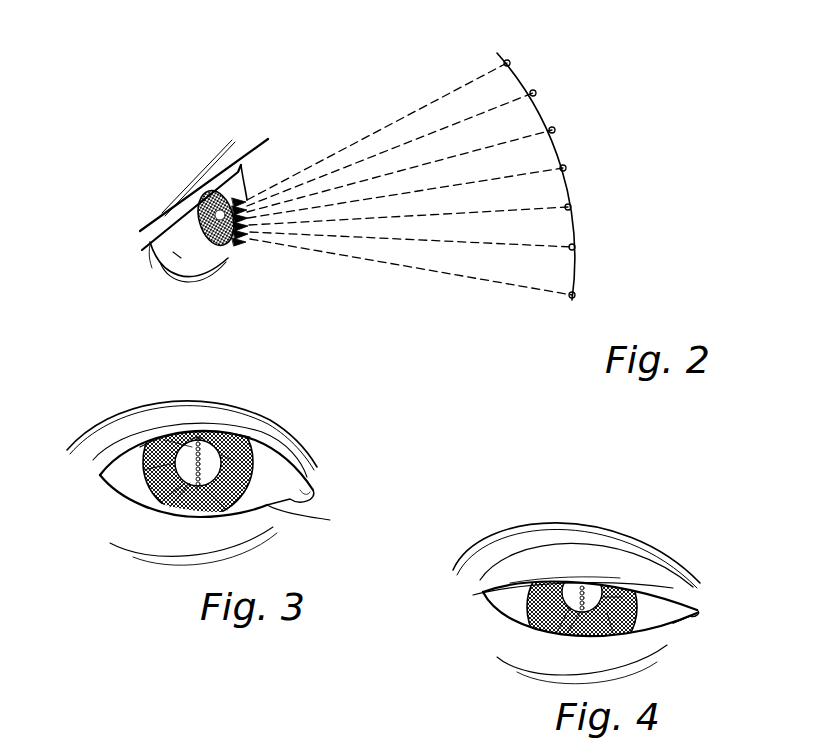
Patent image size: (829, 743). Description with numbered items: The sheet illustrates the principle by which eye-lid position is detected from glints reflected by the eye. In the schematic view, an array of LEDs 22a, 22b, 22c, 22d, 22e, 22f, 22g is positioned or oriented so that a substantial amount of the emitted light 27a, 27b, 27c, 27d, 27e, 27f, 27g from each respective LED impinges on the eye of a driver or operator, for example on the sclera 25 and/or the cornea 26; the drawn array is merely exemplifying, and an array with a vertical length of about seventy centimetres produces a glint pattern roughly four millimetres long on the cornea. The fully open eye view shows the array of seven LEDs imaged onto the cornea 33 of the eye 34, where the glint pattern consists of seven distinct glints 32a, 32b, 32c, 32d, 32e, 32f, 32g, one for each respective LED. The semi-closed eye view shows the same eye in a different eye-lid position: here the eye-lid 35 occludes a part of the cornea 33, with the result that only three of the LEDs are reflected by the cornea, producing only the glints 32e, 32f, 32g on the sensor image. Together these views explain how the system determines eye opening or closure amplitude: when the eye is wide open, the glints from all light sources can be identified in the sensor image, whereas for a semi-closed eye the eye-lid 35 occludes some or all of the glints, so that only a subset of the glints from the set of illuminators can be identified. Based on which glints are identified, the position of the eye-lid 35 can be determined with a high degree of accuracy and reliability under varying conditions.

In FIG. 2, the LED 22a is at (510, 63).
In FIG. 2, the LED 22b is at (536, 93).
In FIG. 2, the LED 22c is at (555, 130).
In FIG. 2, the LED 22d is at (566, 168).
In FIG. 2, the LED 22e is at (571, 207).
In FIG. 2, the LED 22f is at (575, 247).
In FIG. 2, the LED 22g is at (575, 295).
In FIG. 2, the sclera 25 is at (247, 198).
In FIG. 2, the cornea 26 is at (249, 234).
In FIG. 2, the emitted light 27a is at (360, 145).
In FIG. 2, the emitted light 27b is at (403, 147).
In FIG. 2, the emitted light 27c is at (447, 158).
In FIG. 2, the emitted light 27d is at (348, 230).
In FIG. 2, the emitted light 27e is at (395, 230).
In FIG. 2, the emitted light 27f is at (460, 243).
In FIG. 2, the emitted light 27g is at (510, 288).
In FIG. 3, the glint 32a is at (187, 438).
In FIG. 3, the glint 32b is at (165, 440).
In FIG. 3, the glint 32c is at (143, 470).
In FIG. 3, the glint 32d is at (163, 500).
In FIG. 3, the glint 32e is at (170, 507).
In FIG. 4, the glint 32e is at (557, 632).
In FIG. 3, the glint 32f is at (227, 510).
In FIG. 4, the glint 32f is at (567, 633).
In FIG. 3, the glint 32g is at (197, 490).
In FIG. 4, the glint 32g is at (613, 633).
In FIG. 3, the cornea 33 is at (233, 460).
In FIG. 4, the cornea 33 is at (622, 597).
In FIG. 3, the eye 34 is at (330, 520).
In FIG. 4, the eye 34 is at (673, 623).
In FIG. 4, the eye-lid 35 is at (613, 557).